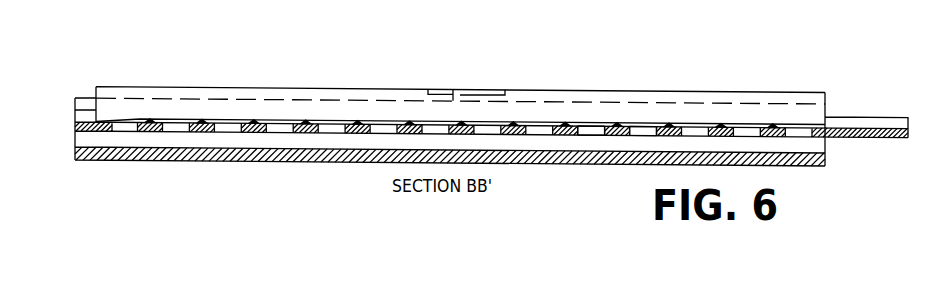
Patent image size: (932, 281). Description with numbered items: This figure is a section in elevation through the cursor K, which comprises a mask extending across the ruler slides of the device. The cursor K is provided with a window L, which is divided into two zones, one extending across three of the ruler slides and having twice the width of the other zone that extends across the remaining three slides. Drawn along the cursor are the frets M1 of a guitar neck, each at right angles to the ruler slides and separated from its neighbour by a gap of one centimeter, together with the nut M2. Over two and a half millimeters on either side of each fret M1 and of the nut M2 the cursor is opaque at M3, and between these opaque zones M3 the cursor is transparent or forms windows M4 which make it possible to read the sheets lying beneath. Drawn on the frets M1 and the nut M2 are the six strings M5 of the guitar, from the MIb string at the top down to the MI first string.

The cursor K is at (143, 87).
The window L is at (461, 92).
The fret M1 is at (152, 120).
The nut M2 is at (773, 125).
The opaque zone M3 is at (303, 122).
The window M4 is at (642, 130).
The string M5 is at (705, 123).